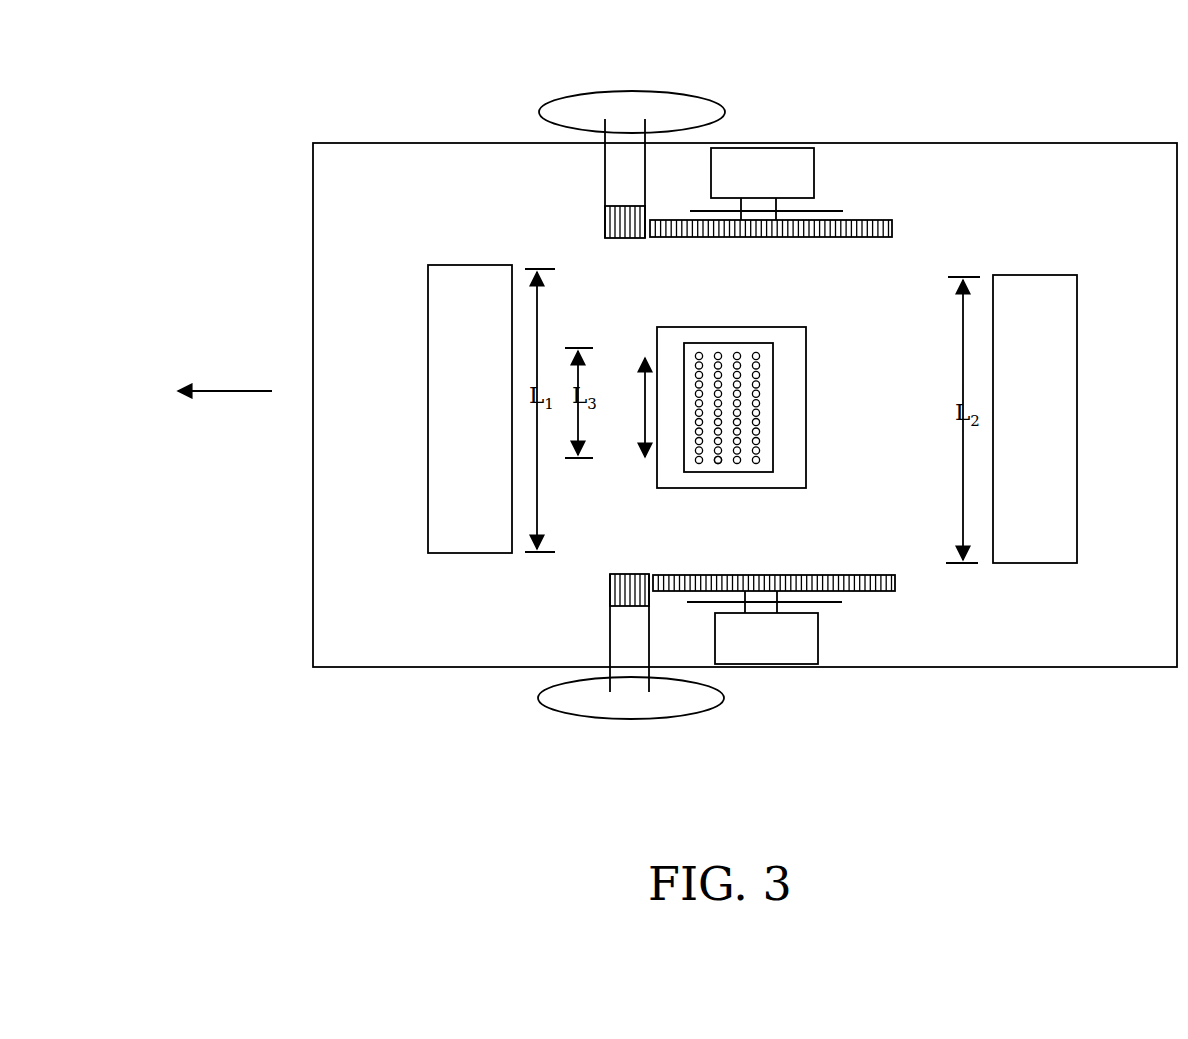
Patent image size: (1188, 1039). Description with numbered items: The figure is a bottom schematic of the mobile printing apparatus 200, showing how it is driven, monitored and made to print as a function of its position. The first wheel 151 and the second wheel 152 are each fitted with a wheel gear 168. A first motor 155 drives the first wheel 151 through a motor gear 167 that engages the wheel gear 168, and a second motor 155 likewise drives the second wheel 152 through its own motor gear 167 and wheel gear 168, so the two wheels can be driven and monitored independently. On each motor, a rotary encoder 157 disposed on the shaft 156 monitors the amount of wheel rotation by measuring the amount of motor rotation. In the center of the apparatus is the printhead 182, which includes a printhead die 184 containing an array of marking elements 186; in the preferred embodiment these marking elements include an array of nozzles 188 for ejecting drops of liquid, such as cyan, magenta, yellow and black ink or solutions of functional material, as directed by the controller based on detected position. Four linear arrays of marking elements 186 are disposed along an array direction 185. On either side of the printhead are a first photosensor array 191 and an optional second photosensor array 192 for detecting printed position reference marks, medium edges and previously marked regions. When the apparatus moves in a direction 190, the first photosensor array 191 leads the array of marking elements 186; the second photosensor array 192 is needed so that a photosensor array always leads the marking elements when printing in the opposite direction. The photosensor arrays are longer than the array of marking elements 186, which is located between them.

The mobile printing apparatus 200 is at (280, 86).
The first wheel 151 is at (610, 93).
The second wheel 152 is at (580, 715).
The wheel gear 168 is at (605, 217).
The motor 155 is at (763, 150).
The shaft 156 is at (777, 207).
The rotary encoder 157 is at (850, 208).
The motor gear 167 is at (895, 227).
The printhead 182 is at (806, 410).
The printhead die 184 is at (773, 425).
The array direction 185 is at (645, 413).
The array of marking elements 186 is at (723, 472).
The array of nozzles 188 is at (718, 350).
The direction 190 is at (207, 391).
The first photosensor array 191 is at (428, 433).
The second photosensor array 192 is at (1077, 485).